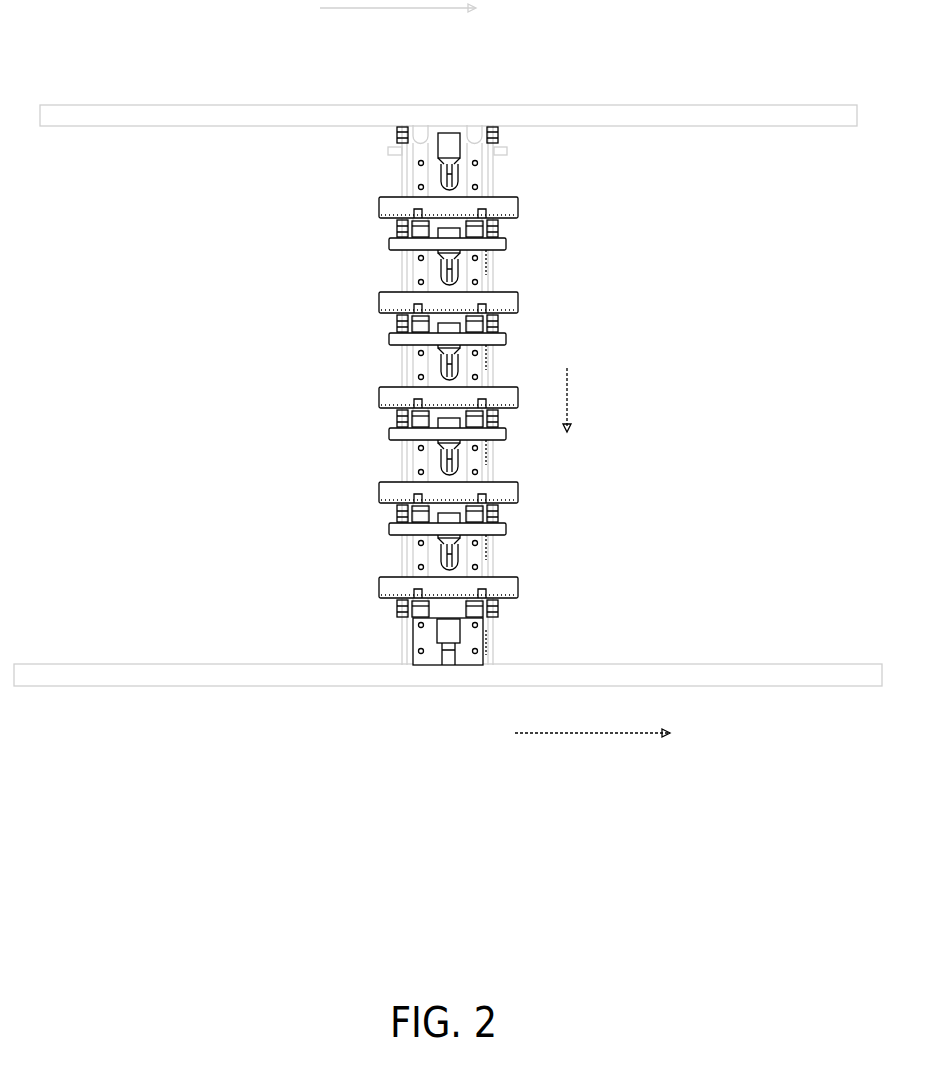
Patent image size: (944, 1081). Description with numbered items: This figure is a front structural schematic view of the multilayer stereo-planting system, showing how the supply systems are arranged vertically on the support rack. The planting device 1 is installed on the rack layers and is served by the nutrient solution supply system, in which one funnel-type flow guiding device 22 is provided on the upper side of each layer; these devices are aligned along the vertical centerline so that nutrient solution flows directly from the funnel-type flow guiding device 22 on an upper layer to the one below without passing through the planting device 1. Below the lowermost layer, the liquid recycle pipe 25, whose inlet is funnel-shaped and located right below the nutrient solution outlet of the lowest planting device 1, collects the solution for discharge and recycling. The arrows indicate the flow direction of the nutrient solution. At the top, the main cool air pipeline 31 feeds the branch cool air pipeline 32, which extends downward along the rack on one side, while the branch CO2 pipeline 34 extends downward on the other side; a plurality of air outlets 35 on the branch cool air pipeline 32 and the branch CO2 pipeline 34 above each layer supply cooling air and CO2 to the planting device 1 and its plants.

The planting device 1 is at (403, 398).
The funnel-type flow guiding device 22 is at (442, 328).
The liquid recycle pipe 25 is at (665, 675).
The main cool air pipeline 31 is at (645, 116).
The branch cool air pipeline 32 is at (470, 575).
The branch CO2 pipeline 34 is at (410, 460).
The air outlets 35 is at (478, 566).